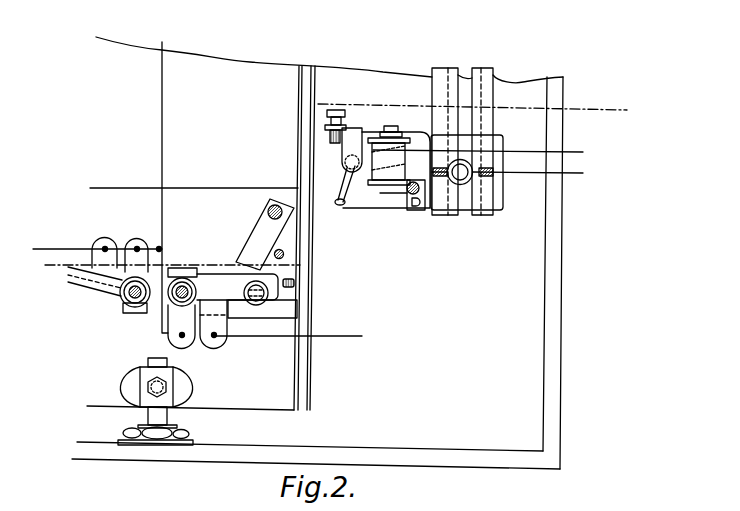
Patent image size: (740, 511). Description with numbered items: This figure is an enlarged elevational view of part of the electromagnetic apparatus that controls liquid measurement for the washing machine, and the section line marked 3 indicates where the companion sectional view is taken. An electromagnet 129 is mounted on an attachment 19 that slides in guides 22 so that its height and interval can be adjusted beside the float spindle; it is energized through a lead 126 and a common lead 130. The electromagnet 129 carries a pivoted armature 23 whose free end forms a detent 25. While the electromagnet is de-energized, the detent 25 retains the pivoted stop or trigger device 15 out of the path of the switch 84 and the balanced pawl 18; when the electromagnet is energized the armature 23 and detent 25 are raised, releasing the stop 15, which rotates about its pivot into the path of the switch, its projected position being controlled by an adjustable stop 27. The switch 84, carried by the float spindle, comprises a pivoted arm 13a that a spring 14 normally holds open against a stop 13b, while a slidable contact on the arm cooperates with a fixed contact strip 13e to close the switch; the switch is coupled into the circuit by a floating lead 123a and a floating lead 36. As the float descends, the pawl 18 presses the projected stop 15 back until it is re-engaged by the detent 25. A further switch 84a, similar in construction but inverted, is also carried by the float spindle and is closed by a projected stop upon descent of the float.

The section line 3- 3 is at (627, 128).
The guides 22 is at (483, 82).
The attachment 19 is at (485, 195).
The lead 126 is at (581, 152).
The common lead 130 is at (569, 175).
The electromagnet 129 is at (395, 163).
The pivoted armature 23 is at (411, 206).
The pivoted stop or trigger device 15 is at (343, 176).
The detent 25 is at (336, 203).
The adjustable stop 27 is at (328, 110).
The balanced pawl 18 is at (263, 223).
The spring 14 is at (227, 272).
The pivoted arm 13a is at (208, 288).
The stop 13b is at (282, 282).
The switch 84 is at (290, 291).
The fixed contact strip 13e is at (277, 305).
The floating lead 36 is at (322, 338).
The floating lead 123a is at (158, 320).
The further switch 84a is at (90, 299).